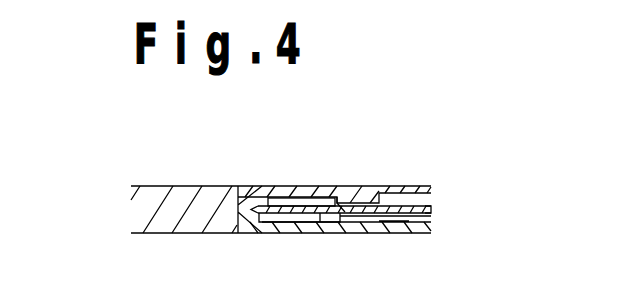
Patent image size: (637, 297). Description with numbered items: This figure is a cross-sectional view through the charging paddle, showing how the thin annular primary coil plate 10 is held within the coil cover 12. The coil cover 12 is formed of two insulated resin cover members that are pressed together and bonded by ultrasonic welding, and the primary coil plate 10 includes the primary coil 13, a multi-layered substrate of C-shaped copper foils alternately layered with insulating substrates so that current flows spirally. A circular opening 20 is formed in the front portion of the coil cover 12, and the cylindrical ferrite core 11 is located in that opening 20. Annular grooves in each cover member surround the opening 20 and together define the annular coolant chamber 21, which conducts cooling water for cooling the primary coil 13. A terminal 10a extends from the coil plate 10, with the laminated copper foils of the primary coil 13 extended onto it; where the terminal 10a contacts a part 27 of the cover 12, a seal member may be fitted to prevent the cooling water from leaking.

The ferrite core 11 is at (195, 186).
The circular opening 20 is at (227, 186).
The coolant chamber 21 is at (275, 200).
The primary coil 13 is at (345, 186).
The coil cover 12 is at (414, 186).
The primary coil plate 10 is at (317, 215).
The part of the cover 27 is at (356, 221).
The terminal 10a is at (419, 214).